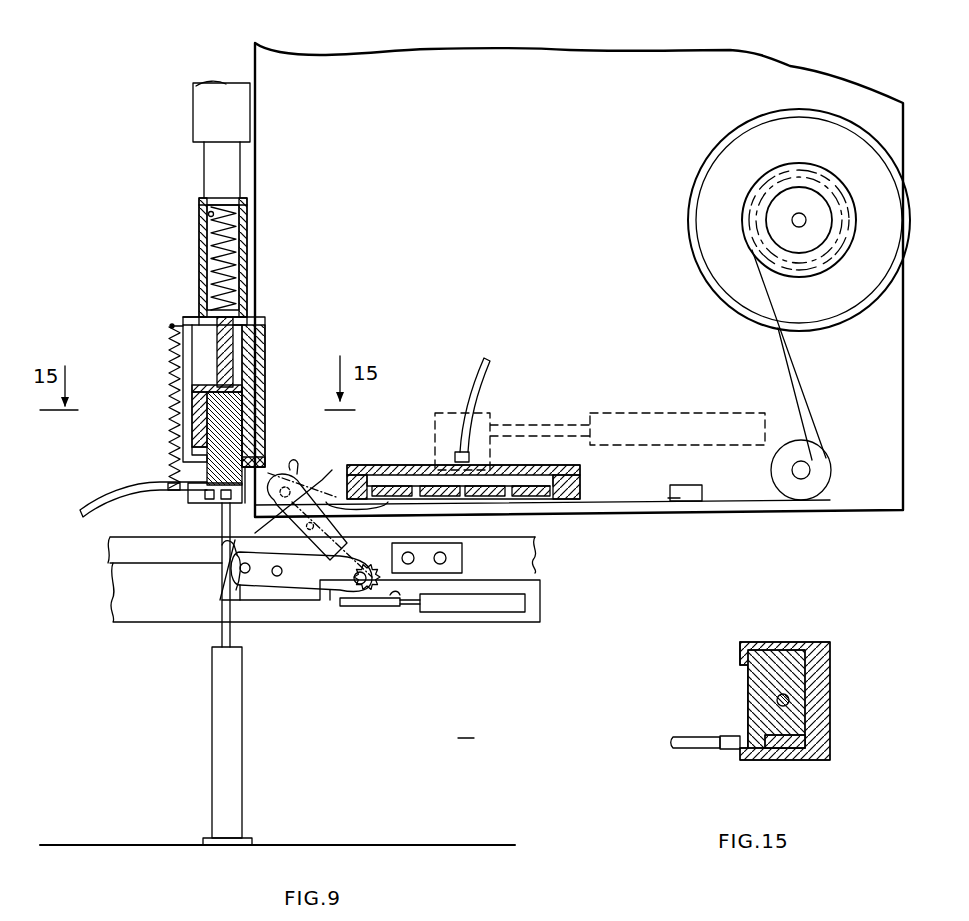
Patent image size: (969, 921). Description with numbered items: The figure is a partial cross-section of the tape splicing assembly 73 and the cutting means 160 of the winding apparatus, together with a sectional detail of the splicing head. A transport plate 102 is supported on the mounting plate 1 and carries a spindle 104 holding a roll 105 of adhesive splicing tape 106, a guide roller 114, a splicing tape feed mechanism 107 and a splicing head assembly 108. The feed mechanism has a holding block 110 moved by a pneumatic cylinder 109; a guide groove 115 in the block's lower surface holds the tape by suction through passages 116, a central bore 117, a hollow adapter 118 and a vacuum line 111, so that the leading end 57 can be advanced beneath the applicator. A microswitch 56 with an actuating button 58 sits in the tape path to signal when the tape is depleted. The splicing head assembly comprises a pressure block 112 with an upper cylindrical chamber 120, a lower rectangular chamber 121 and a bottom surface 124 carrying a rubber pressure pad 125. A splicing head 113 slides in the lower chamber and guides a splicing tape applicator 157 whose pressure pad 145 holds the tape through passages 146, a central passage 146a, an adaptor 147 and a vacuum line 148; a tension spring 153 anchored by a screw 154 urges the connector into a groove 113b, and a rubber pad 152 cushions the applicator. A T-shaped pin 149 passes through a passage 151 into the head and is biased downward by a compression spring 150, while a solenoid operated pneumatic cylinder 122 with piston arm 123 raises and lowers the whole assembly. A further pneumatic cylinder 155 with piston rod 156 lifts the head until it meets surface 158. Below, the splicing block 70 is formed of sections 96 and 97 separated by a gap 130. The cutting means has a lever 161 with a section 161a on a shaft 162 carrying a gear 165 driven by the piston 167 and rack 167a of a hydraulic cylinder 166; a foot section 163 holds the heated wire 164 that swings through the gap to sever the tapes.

In FIG. 9, the mounting plate 1 is at (466, 728).
In FIG. 9, the microswitch 56 is at (680, 484).
In FIG. 9, the leading end 57 is at (352, 500).
In FIG. 9, the actuating button 58 is at (672, 500).
In FIG. 9, the splicing block 70 is at (112, 605).
In FIG. 9, the splicing assembly 73 is at (180, 250).
In FIG. 9, the splicing block section 96 is at (108, 548).
In FIG. 9, the splicing block section 97 is at (540, 551).
In FIG. 9, the transport plate 102 is at (842, 518).
In FIG. 9, the spindle 104 is at (795, 228).
In FIG. 9, the roll of adhesive splicing tape 105 is at (745, 226).
In FIG. 9, the adhesive splicing tape 106 is at (802, 385).
In FIG. 9, the splicing tape feed mechanism 107 is at (520, 446).
In FIG. 9, the splicing head assembly 108 is at (270, 340).
In FIG. 9, the pneumatic cylinder 109 is at (680, 412).
In FIG. 9, the splicing tape holding block 110 is at (400, 468).
In FIG. 9, the vacuum line 111 is at (476, 370).
In FIG. 9, the pressure block 112 is at (202, 268).
In FIG. 15, the pressure block 112 is at (830, 680).
In FIG. 9, the splicing head 113 is at (180, 498).
In FIG. 15, the splicing head 113 is at (748, 718).
In FIG. 9, the groove 113b is at (175, 470).
In FIG. 9, the guide roller 114 is at (826, 466).
In FIG. 9, the guide groove 115 is at (575, 503).
In FIG. 9, the passages 116 is at (580, 472).
In FIG. 9, the central bore 117 is at (535, 478).
In FIG. 9, the hollow adapter 118 is at (468, 450).
In FIG. 9, the cylindrical chamber 120 is at (207, 212).
In FIG. 9, the rectangular chamber 121 is at (200, 345).
In FIG. 15, the rectangular chamber 121 is at (740, 665).
In FIG. 9, the solenoid operated pneumatic cylinder 122 is at (193, 102).
In FIG. 9, the piston arm 123 is at (206, 157).
In FIG. 9, the horizontal bottom surface 124 is at (258, 470).
In FIG. 9, the rubber pressure pad 125 is at (309, 414).
In FIG. 9, the gap 130 is at (321, 494).
In FIG. 9, the splicing tape pressure pad 145 is at (268, 458).
In FIG. 9, the passages 146 is at (222, 503).
In FIG. 9, the central passage 146a is at (206, 497).
In FIG. 9, the adaptor 147 is at (168, 482).
In FIG. 15, the adaptor 147 is at (730, 750).
In FIG. 9, the vacuum line 148 is at (128, 490).
In FIG. 15, the vacuum line 148 is at (690, 750).
In FIG. 9, the T-shaped pin 149 is at (236, 312).
In FIG. 15, the T-shaped pin 149 is at (778, 700).
In FIG. 9, the helical compression spring 150 is at (250, 240).
In FIG. 9, the passage 151 is at (266, 326).
In FIG. 9, the rubber pad 152 is at (244, 388).
In FIG. 9, the helical tension spring 153 is at (196, 407).
In FIG. 9, the screw 154 is at (170, 326).
In FIG. 9, the pneumatic cylinder 155 is at (212, 722).
In FIG. 9, the piston rod 156 is at (222, 530).
In FIG. 9, the splicing tape applicator 157 is at (212, 402).
In FIG. 15, the splicing tape applicator 157 is at (782, 748).
In FIG. 9, the surface 158 is at (172, 336).
In FIG. 9, the cutting means 160 is at (322, 605).
In FIG. 9, the lever 161 is at (284, 588).
In FIG. 9, the lever section 161a is at (302, 592).
In FIG. 9, the shaft 162 is at (462, 558).
In FIG. 9, the foot section 163 is at (236, 590).
In FIG. 9, the high impedance wire 164 is at (230, 548).
In FIG. 9, the gear 165 is at (355, 608).
In FIG. 9, the hydraulic cylinder 166 is at (508, 618).
In FIG. 9, the piston 167 is at (413, 607).
In FIG. 9, the rack 167a is at (398, 607).